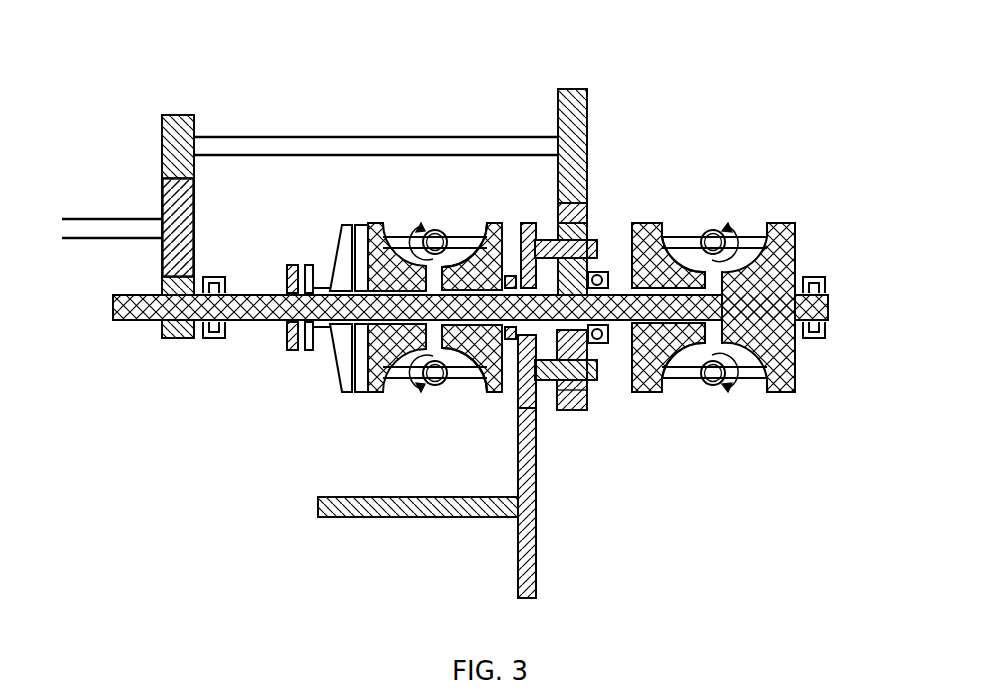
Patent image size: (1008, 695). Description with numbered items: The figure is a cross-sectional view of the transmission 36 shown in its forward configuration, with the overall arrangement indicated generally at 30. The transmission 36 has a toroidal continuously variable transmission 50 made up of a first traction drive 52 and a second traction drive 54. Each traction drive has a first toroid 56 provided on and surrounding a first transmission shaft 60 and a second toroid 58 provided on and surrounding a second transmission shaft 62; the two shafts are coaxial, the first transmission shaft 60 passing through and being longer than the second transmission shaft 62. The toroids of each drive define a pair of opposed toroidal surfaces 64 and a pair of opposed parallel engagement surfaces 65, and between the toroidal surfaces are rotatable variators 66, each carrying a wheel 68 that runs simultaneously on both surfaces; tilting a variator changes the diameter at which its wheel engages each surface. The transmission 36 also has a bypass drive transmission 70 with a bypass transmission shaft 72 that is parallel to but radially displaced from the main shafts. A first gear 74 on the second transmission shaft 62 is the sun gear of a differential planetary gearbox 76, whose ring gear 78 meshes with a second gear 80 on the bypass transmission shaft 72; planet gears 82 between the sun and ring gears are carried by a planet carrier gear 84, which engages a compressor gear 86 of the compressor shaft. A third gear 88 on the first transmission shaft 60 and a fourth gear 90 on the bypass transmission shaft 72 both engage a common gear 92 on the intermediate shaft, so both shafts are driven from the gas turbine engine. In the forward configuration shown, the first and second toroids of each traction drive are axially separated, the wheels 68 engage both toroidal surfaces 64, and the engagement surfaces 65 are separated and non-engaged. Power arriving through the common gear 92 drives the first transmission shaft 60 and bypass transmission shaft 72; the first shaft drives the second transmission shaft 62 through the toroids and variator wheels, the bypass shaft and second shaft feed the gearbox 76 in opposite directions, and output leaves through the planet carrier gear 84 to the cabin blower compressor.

The bearing arrangement 30 is at (724, 130).
The transmission 36 is at (292, 96).
The toroidal continuously variable transmission 50 is at (243, 417).
The first traction drive 52 is at (398, 428).
The second traction drive 54 is at (788, 412).
The first toroid 56 is at (366, 370).
The second toroid 58 is at (505, 222).
The first transmission shaft 60 is at (255, 311).
The second transmission shaft 62 is at (621, 286).
The opposed toroidal surfaces 64 is at (403, 247).
The opposed parallel engagement surfaces 65 is at (392, 265).
The variator 66 is at (436, 229).
The wheel 68 is at (473, 230).
The bypass drive transmission 70 is at (210, 112).
The bypass transmission shaft 72 is at (258, 146).
The first gear 74 is at (597, 239).
The differential planetary gearbox 76 is at (571, 414).
The ring gear 78 is at (596, 380).
The second gear 80 is at (578, 123).
The planet gears 82 is at (592, 372).
The planet carrier gear 84 is at (563, 437).
The compressor gear 86 is at (537, 567).
The third gear 88 is at (175, 339).
The fourth gear 90 is at (163, 142).
The common gear 92 is at (176, 258).